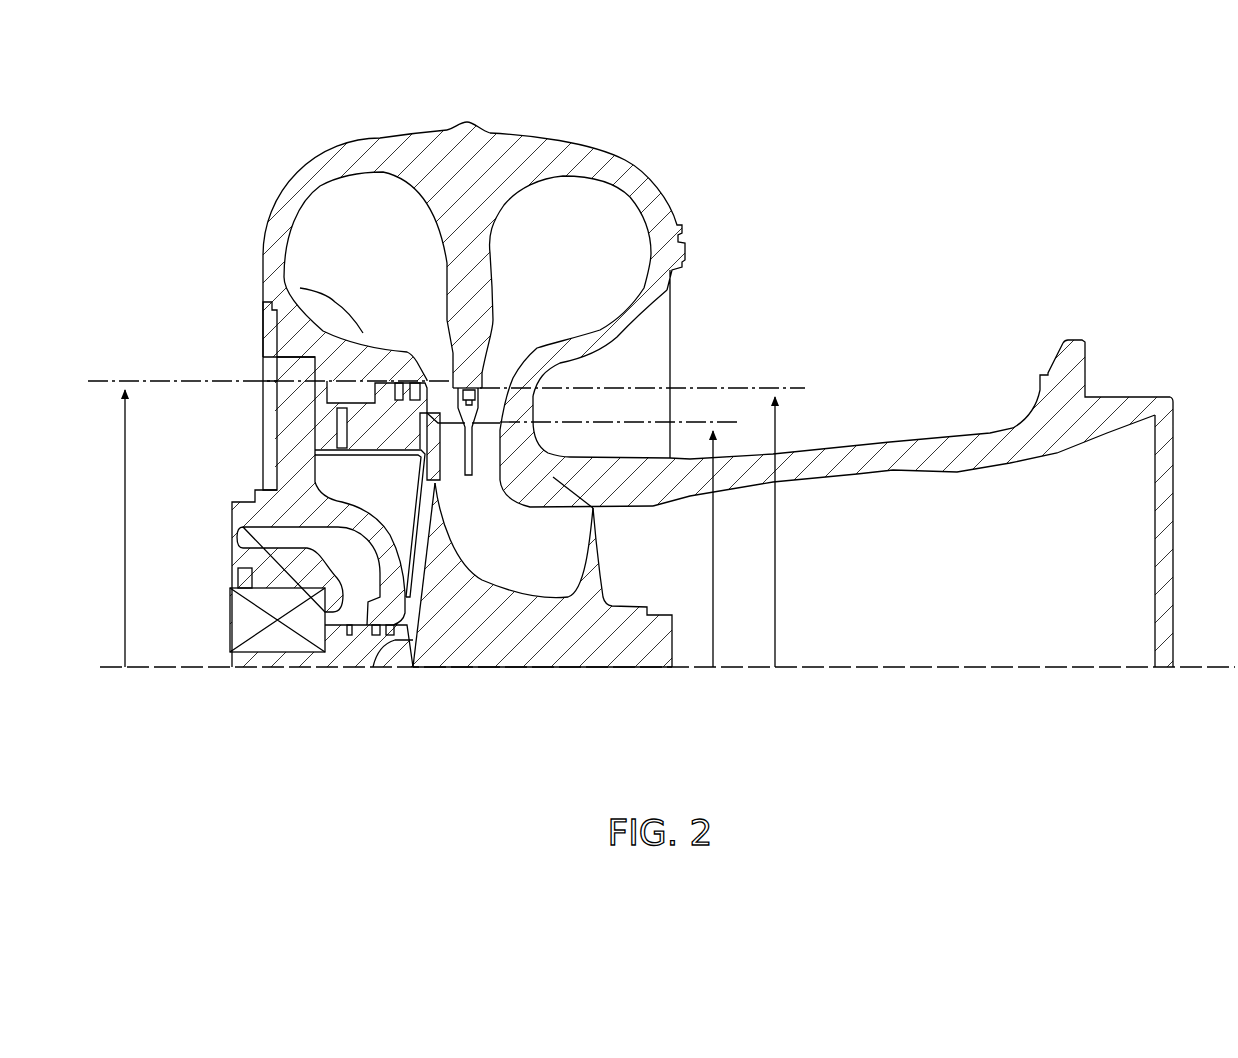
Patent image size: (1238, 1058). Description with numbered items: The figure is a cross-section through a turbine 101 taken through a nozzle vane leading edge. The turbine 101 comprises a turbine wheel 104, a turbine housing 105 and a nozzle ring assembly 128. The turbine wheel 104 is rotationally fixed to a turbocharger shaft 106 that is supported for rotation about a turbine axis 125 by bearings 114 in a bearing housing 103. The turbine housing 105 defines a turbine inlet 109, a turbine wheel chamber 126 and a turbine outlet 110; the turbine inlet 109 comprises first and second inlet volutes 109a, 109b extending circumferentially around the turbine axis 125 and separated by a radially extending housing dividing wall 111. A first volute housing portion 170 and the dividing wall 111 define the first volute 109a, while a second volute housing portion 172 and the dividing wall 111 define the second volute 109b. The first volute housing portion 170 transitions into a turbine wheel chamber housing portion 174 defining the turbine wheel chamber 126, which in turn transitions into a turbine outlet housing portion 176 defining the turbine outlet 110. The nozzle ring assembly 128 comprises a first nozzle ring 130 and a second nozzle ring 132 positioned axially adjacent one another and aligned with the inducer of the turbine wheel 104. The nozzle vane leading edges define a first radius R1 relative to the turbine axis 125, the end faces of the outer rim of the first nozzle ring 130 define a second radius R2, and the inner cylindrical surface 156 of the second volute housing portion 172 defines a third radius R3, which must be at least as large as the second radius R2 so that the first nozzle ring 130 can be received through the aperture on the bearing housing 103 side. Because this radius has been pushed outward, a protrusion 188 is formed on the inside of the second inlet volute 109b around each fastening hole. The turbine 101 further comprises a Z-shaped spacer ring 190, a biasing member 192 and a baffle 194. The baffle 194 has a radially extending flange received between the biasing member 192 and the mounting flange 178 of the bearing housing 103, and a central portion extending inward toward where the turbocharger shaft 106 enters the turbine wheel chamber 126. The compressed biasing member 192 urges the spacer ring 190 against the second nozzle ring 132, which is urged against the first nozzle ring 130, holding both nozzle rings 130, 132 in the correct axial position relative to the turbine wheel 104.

The turbine 101 is at (258, 132).
The bearing housing 103 is at (237, 557).
The turbine wheel 104 is at (588, 637).
The turbine housing 105 is at (460, 165).
The turbocharger shaft 106 is at (347, 652).
The turbine inlet 109 is at (398, 114).
The first inlet volute 109a is at (565, 228).
The second inlet volute 109b is at (370, 243).
The turbine outlet 110 is at (1045, 598).
The housing dividing wall 111 is at (470, 275).
The bearings 114 is at (255, 617).
The turbine axis 125 is at (960, 668).
The turbine wheel chamber 126 is at (536, 648).
The nozzle ring assembly 128 is at (446, 461).
The first nozzle ring 130 is at (488, 460).
The second nozzle ring 132 is at (435, 483).
The inner cylindrical surface 156 is at (383, 384).
The first volute housing portion 170 is at (647, 200).
The second volute housing portion 172 is at (285, 199).
The turbine wheel chamber housing portion 174 is at (593, 508).
The turbine outlet housing portion 176 is at (953, 455).
The mounting flange 178 is at (343, 390).
The protrusion 188 is at (300, 288).
The spacer ring 190 is at (293, 368).
The biasing member 192 is at (340, 420).
The baffle 194 is at (420, 458).
The first radius R1 is at (627, 544).
The second radius R2 is at (650, 527).
The third radius R3 is at (266, 524).